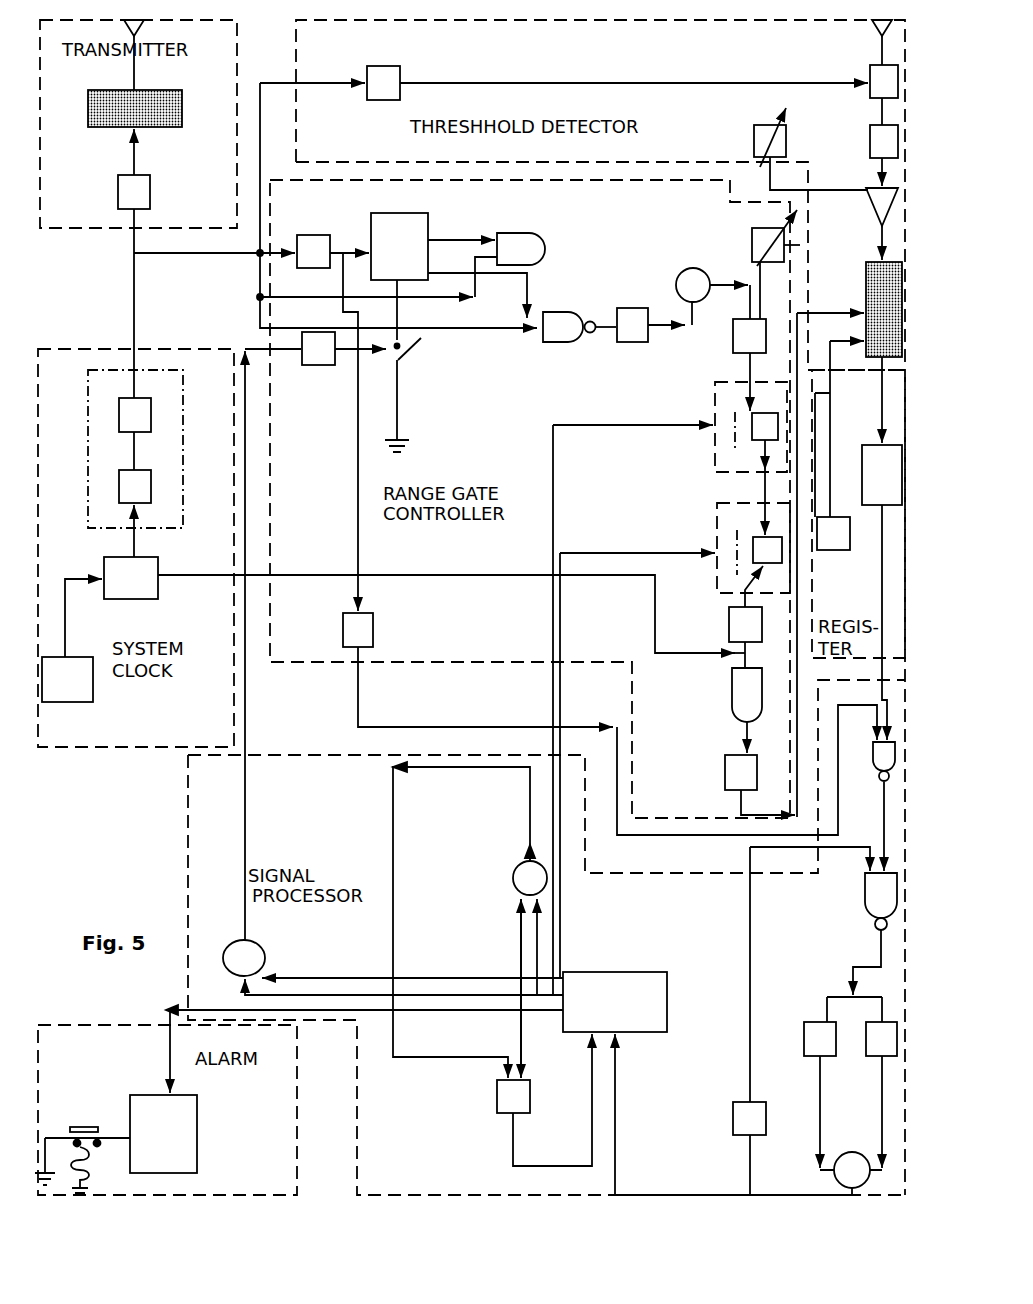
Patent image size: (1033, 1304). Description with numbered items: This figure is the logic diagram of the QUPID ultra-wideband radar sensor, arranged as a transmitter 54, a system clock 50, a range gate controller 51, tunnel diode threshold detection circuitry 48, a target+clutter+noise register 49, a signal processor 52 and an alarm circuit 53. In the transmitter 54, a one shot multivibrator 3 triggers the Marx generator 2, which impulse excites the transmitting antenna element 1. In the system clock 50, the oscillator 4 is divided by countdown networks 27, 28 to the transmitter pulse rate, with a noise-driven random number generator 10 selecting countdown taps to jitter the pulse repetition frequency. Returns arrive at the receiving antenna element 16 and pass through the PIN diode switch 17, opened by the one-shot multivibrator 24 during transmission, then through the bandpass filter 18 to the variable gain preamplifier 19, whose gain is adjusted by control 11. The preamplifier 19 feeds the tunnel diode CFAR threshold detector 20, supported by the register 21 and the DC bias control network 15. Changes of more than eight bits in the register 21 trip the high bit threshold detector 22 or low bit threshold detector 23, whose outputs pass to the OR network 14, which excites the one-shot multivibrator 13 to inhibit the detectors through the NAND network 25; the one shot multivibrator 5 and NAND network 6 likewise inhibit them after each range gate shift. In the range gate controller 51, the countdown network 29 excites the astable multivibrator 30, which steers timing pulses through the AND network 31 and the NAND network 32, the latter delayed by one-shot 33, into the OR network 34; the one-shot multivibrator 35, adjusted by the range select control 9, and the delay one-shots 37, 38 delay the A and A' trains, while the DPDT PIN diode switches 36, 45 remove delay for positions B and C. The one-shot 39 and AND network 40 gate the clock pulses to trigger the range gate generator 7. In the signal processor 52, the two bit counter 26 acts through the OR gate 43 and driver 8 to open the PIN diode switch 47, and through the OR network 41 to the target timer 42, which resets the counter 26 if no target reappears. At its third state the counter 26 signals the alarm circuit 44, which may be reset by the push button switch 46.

The transmitting antenna element 1 is at (137, 80).
The Marx generator 2 is at (190, 105).
The one shot multivibrator 3 is at (152, 190).
The 40 MHz oscillator 4 is at (158, 592).
The one shot multivibrator 5 is at (375, 632).
The NAND network 6 is at (876, 778).
The range gate generator 7 is at (725, 775).
The driver 8 is at (318, 365).
The range select control 9 is at (800, 245).
The noise-driven random number generator 10 is at (95, 695).
The gain control 11 is at (754, 140).
The one-shot multivibrator 13 is at (733, 1125).
The OR network 14 is at (858, 1185).
The DC bias control network 15 is at (830, 552).
The receiving antenna element 16 is at (868, 70).
The PIN diode switch 17 is at (868, 132).
The bandpass filter 18 is at (868, 183).
The variable gain S-band preamplifier 19 is at (868, 207).
The tunnel diode CFAR threshold detector 20 is at (866, 265).
The 32-bit register 21 is at (862, 447).
The high bit threshold detector 22 is at (804, 1048).
The low bit threshold detector 23 is at (870, 1063).
The one-shot multivibrator 24 is at (388, 66).
The NAND network 25 is at (866, 905).
The range generator selection network 26 is at (635, 972).
The countdown network 27 is at (152, 490).
The countdown network 28 is at (152, 418).
The countdown network 29 is at (313, 235).
The astable multivibrator 30 is at (415, 193).
The AND network 31 is at (520, 233).
The NAND network 32 is at (560, 312).
The one shot multivibrator 33 is at (630, 342).
The OR network 34 is at (755, 226).
The one-shot multivibrator 35 is at (733, 345).
The DPDT PIN diode switch 36 is at (715, 455).
The delay one-shot 37 is at (778, 428).
The delay one-shot 38 is at (785, 560).
The one-shot 39 is at (729, 625).
The AND network 40 is at (732, 700).
The OR network 41 is at (513, 883).
The target timer 42 is at (497, 1108).
The OR gate 43 is at (232, 948).
The alarm circuit 44 is at (197, 1138).
The DPDT PIN diode switch 45 is at (725, 510).
The push button switch 46 is at (78, 1125).
The PIN diode switch 47 is at (415, 360).
The threshold detection circuitry 48 is at (295, 55).
The target+clutter+noise register 49 is at (862, 657).
The system clock 50 is at (145, 748).
The range gate controller 51 is at (330, 664).
The signal processor 52 is at (185, 862).
The alarm circuit 53 is at (300, 1112).
The transmitter 54 is at (105, 245).